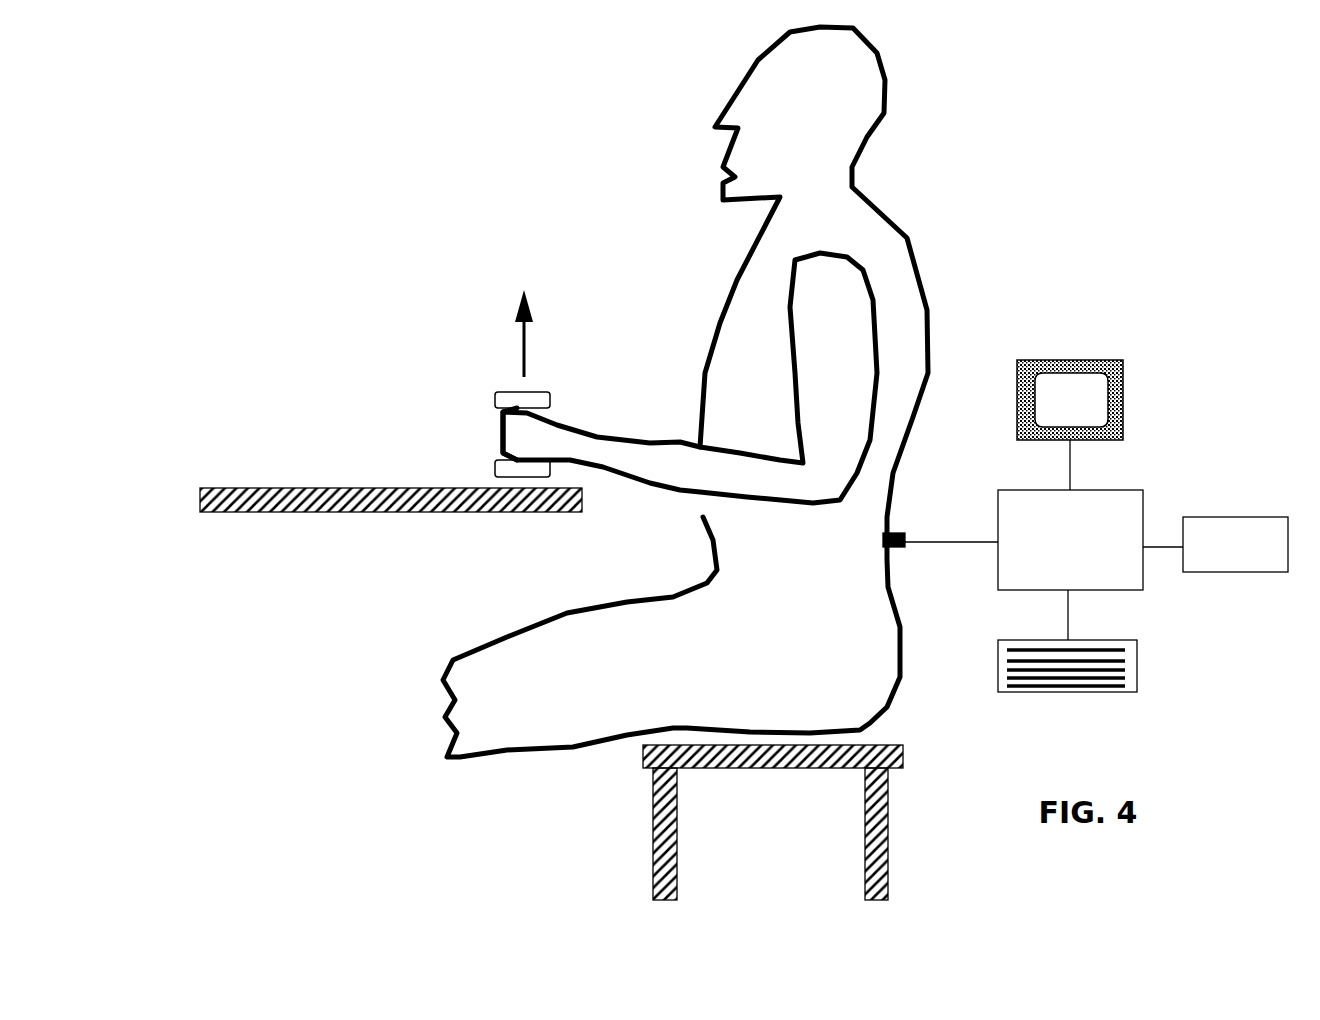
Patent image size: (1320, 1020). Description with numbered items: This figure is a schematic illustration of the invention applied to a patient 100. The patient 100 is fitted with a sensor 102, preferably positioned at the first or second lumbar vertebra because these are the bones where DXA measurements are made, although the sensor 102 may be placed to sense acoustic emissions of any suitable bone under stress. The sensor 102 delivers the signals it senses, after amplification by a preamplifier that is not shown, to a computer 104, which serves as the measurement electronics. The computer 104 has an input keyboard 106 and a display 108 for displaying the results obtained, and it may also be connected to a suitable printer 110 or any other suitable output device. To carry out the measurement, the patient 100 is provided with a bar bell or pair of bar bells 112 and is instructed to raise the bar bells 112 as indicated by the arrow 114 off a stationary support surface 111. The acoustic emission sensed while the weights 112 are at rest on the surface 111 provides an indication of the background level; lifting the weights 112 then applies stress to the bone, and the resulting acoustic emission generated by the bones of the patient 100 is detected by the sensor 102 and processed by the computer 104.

The patient 100 is at (685, 392).
The sensor 102 is at (908, 530).
The computer 104 is at (1090, 540).
The input keyboard 106 is at (1137, 685).
The display 108 is at (1122, 422).
The printer 110 is at (1235, 544).
The stationary support surface 111 is at (400, 512).
The bar bell 112 is at (495, 467).
The arrow 114 is at (535, 352).